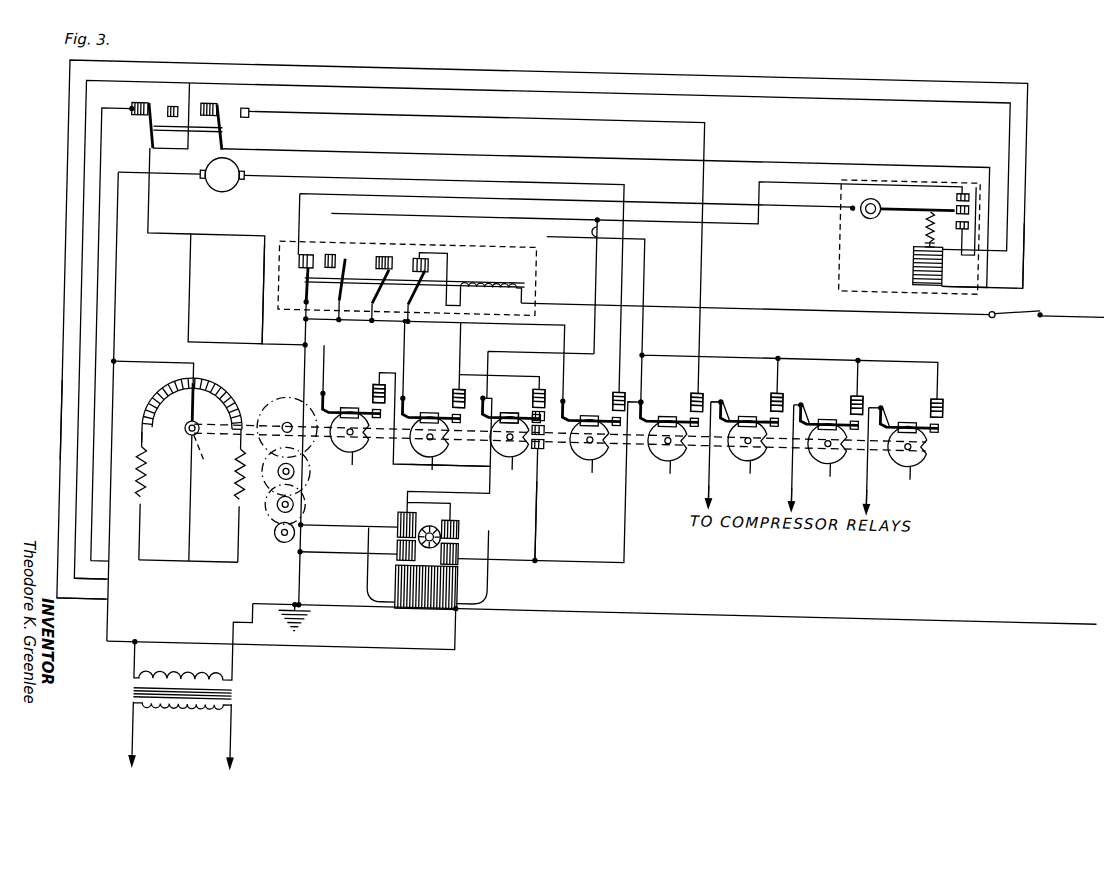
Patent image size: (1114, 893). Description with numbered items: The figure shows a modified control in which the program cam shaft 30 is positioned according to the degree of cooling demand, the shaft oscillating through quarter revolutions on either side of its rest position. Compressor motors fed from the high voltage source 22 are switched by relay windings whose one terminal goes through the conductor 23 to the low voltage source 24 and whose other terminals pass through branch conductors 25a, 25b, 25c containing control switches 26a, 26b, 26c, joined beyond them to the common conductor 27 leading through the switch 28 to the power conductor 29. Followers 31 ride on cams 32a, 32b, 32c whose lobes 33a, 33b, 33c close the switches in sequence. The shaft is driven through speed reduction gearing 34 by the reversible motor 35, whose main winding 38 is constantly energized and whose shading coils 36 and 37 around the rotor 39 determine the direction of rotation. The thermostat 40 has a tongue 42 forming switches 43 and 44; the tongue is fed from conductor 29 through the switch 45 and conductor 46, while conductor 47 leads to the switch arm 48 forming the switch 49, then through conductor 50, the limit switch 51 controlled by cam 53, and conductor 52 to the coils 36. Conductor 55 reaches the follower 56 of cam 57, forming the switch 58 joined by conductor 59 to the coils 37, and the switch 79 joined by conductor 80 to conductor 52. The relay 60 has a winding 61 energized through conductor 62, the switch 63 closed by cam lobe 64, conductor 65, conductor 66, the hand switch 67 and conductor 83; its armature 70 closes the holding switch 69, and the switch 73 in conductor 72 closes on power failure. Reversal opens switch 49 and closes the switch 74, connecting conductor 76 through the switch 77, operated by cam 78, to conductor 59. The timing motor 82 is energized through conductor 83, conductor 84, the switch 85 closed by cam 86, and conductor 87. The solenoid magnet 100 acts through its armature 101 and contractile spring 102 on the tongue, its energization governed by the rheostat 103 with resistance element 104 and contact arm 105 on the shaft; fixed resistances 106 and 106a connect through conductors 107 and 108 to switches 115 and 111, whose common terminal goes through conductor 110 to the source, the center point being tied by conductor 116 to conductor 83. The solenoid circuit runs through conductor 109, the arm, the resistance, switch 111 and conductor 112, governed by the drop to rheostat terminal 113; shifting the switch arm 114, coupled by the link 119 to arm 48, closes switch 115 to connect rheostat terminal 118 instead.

The high voltage source 22 is at (193, 710).
The conductor 23 is at (470, 628).
The low voltage current source 24 is at (201, 666).
The branch conductor 25a is at (882, 470).
The branch conductor 25b is at (768, 493).
The branch conductor 25c is at (688, 491).
The control switch 26a is at (952, 404).
The control switch 26b is at (860, 394).
The control switch 26c is at (780, 395).
The common conductor 27 is at (548, 226).
The switch 28 is at (386, 248).
The power conductor 29 is at (312, 374).
The cam shaft 30 is at (204, 462).
The follower 31 is at (814, 401).
The cam 32a is at (938, 440).
The cam 32b is at (842, 452).
The cam 32c is at (763, 448).
The lobe 33a is at (888, 450).
The lobe 33b is at (806, 454).
The lobe 33c is at (722, 455).
The speed reduction gearing 34 is at (320, 477).
The reversible motor 35 is at (494, 582).
The windings 36 is at (409, 544).
The windings 37 is at (409, 520).
The main winding 38 is at (436, 604).
The rotor 39 is at (443, 514).
The thermostat 40 is at (843, 256).
The tongue 42 is at (909, 192).
The switch 43 is at (975, 188).
The switch 44 is at (975, 178).
The switch 45 is at (310, 247).
The conductor 46 is at (302, 206).
The conductor 47 is at (545, 158).
The switch arm 48 is at (228, 141).
The switch 49 is at (212, 98).
The conductor 50 is at (196, 262).
The limit switch 51 is at (378, 395).
The conductor 52 is at (503, 476).
The cam 53 is at (360, 448).
The conductor 55 is at (598, 217).
The follower 56 is at (523, 403).
The cam 57 is at (524, 452).
The switch 58 is at (554, 432).
The conductor 59 is at (547, 548).
The relay 60 is at (541, 264).
The winding 61 is at (478, 278).
The conductor 62 is at (410, 330).
The switch 63 is at (460, 392).
The cam lobe 64 is at (460, 425).
The conductor 65 is at (466, 354).
The conductor 66 is at (924, 293).
The switch 67 is at (1024, 298).
The switch 69 is at (432, 270).
The armature 70 is at (414, 295).
The conductor 72 is at (492, 218).
The switch 73 is at (336, 247).
The switch 74 is at (255, 104).
The conductor 76 is at (708, 135).
The switch 77 is at (697, 394).
The cam 78 is at (680, 450).
The switch 79 is at (532, 378).
The conductor 80 is at (492, 458).
The auxiliary timing motor 82 is at (244, 163).
The conductor 83 is at (124, 266).
The conductor 84 is at (451, 184).
The switch 85 is at (618, 392).
The cam 86 is at (600, 458).
The conductor 87 is at (550, 323).
The magnet 100 is at (916, 258).
The armature 101 is at (928, 225).
The contractile spring 102 is at (928, 216).
The potential dividing rheostat 103 is at (173, 385).
The resistance element 104 is at (152, 406).
The contact arm 105 is at (197, 434).
The fixed resistance 106 is at (157, 480).
The fixed resistance 106a is at (249, 487).
The conductor 107 is at (68, 240).
The conductor 108 is at (121, 311).
The conductor 109 is at (68, 408).
The conductor 110 is at (268, 295).
The switch 111 is at (141, 114).
The conductor 112 is at (384, 66).
The rheostat terminal 113 is at (250, 390).
The switch arm 114 is at (153, 128).
The switch 115 is at (175, 102).
The conductor 116 is at (132, 360).
The rheostat terminal 118 is at (150, 422).
The link 119 is at (178, 130).